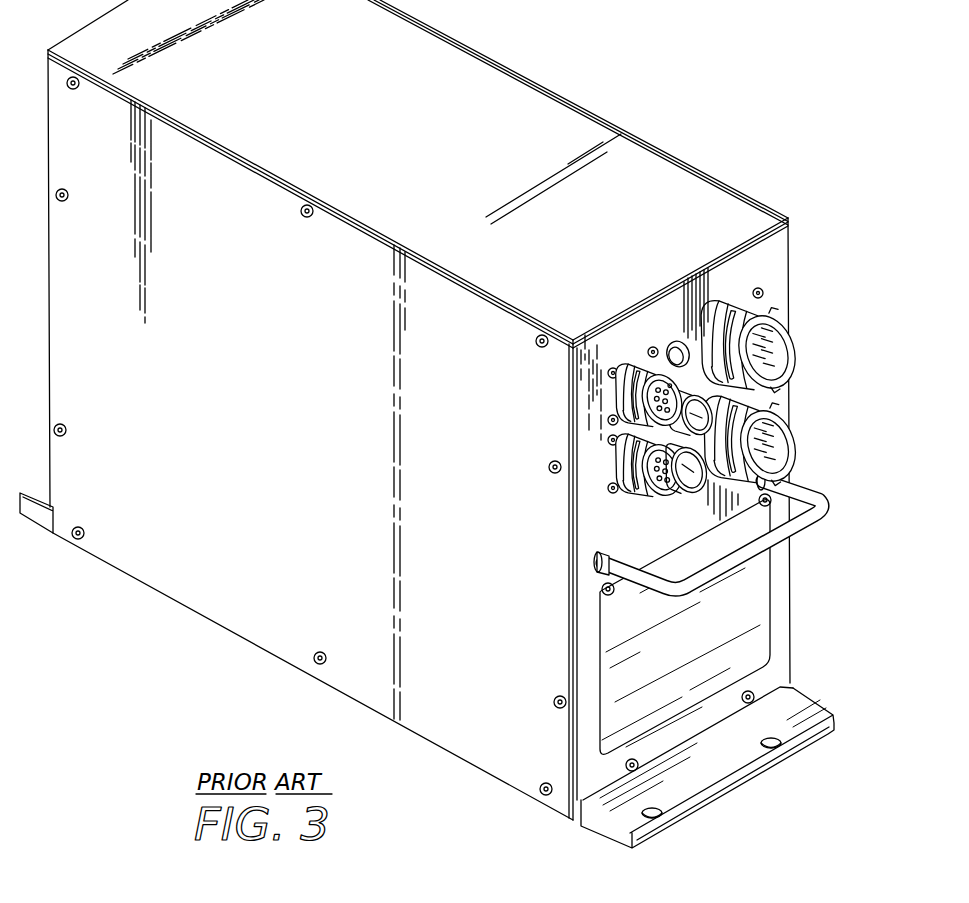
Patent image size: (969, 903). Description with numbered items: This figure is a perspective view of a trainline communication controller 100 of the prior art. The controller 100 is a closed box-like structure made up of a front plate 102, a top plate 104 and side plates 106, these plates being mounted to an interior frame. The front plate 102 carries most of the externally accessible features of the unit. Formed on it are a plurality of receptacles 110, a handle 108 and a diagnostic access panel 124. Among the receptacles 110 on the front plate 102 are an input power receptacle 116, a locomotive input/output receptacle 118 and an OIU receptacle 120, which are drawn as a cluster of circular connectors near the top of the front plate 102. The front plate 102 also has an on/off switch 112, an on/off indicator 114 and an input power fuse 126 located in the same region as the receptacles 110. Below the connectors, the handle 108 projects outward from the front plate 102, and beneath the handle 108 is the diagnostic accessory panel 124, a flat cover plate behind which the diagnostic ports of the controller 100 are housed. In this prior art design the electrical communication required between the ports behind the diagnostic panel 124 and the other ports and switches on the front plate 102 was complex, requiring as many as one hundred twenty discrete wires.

The controller 100 is at (441, 424).
The front plate 102 is at (782, 257).
The top plate 104 is at (369, 89).
The side plates 106 is at (271, 397).
The handle 108 is at (805, 527).
The receptacles 110 is at (677, 425).
The on/off switch 112 is at (630, 440).
The on/off indicator 114 is at (670, 348).
The input power receptacle 116 is at (793, 455).
The locomotive input/output receptacle 118 is at (797, 330).
The OIU receptacle 120 is at (613, 387).
The diagnostic access panel 124 is at (753, 623).
The input power fuse 126 is at (677, 495).